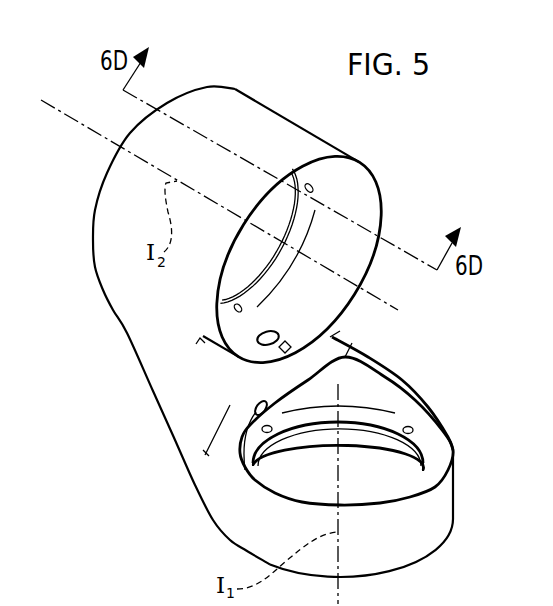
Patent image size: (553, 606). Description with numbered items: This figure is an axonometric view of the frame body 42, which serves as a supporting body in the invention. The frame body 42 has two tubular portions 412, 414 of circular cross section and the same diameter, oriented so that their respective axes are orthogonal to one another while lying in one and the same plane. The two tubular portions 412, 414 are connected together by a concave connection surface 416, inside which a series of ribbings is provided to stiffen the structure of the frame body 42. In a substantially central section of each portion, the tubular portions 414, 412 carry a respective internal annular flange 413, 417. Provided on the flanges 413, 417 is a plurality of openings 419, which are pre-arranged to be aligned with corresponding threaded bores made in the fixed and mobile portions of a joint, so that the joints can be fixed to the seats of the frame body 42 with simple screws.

The frame body 42 is at (152, 451).
The tubular portion 412 is at (433, 530).
The internal annular flange 413 is at (444, 458).
The tubular portion 414 is at (332, 137).
The concave connection surface 416 is at (342, 330).
The internal annular flange 417 is at (307, 231).
The openings 419 is at (312, 189).